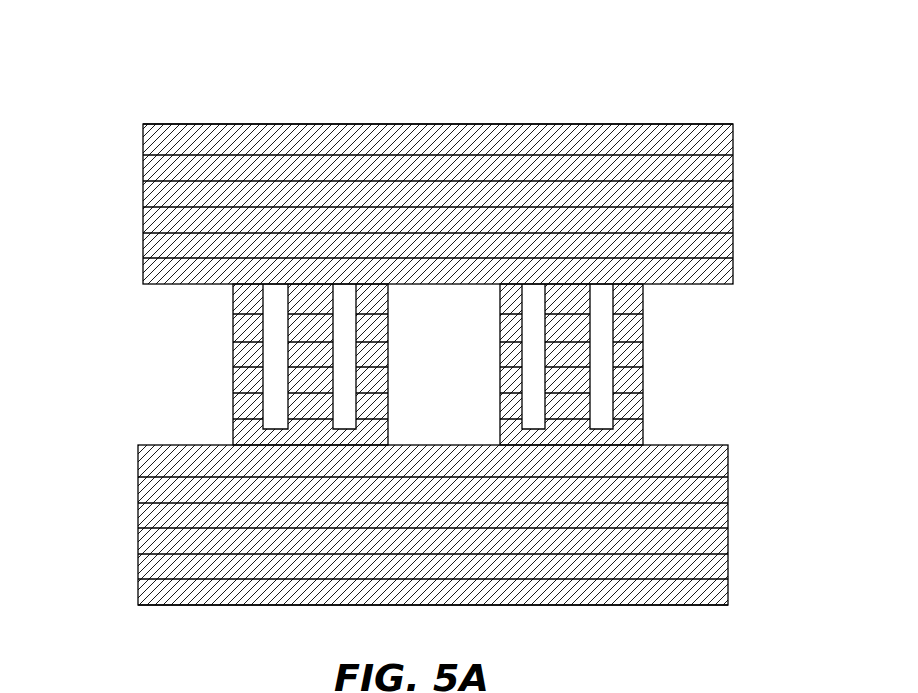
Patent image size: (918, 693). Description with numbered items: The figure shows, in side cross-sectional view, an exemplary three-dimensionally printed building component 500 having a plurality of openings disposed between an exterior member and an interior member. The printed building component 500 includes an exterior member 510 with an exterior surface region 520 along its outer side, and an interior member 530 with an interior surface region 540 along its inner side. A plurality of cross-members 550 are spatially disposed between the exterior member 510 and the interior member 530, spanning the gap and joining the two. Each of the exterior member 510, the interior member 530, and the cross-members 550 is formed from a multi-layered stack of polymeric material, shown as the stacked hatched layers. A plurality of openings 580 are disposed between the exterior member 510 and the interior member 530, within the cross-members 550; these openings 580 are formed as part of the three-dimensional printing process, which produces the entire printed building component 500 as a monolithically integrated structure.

The printed building component 500 is at (148, 62).
The exterior member 510 is at (148, 213).
The exterior surface region 520 is at (666, 105).
The interior member 530 is at (165, 547).
The interior surface region 540 is at (696, 635).
The cross-members 550 is at (234, 378).
The openings 580 is at (600, 367).